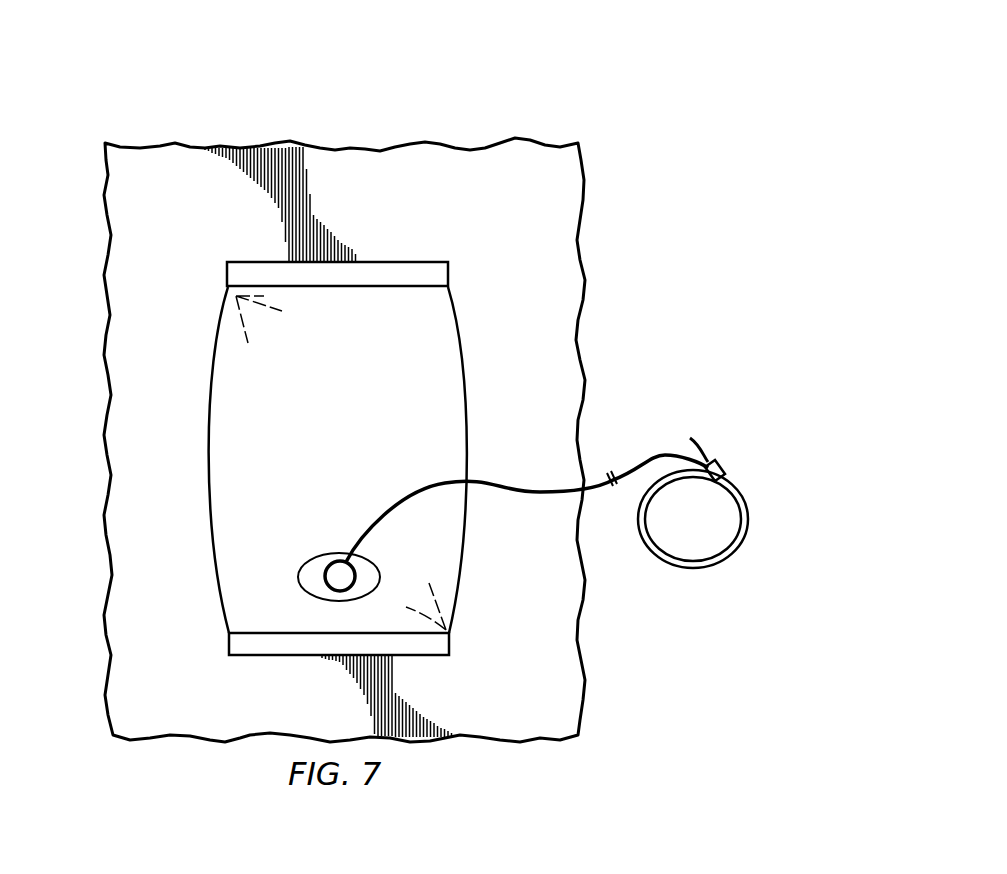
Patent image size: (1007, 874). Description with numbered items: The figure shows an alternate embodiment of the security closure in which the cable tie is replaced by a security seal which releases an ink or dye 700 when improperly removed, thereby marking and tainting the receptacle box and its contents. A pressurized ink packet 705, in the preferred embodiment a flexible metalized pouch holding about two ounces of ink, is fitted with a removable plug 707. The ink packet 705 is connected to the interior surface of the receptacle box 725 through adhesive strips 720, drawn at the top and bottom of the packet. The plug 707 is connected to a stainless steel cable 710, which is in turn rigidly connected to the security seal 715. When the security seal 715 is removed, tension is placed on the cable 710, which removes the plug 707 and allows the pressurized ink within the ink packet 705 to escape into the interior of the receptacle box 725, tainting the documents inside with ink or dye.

The security seal which releases an ink or dye 700 is at (662, 155).
The pressurized ink packet 705 is at (461, 557).
The removable plug 707 is at (337, 560).
The stainless steel cable 710 is at (507, 483).
The security seal 715 is at (748, 518).
The adhesive strips 720 is at (449, 272).
The receptacle box 725 is at (178, 482).